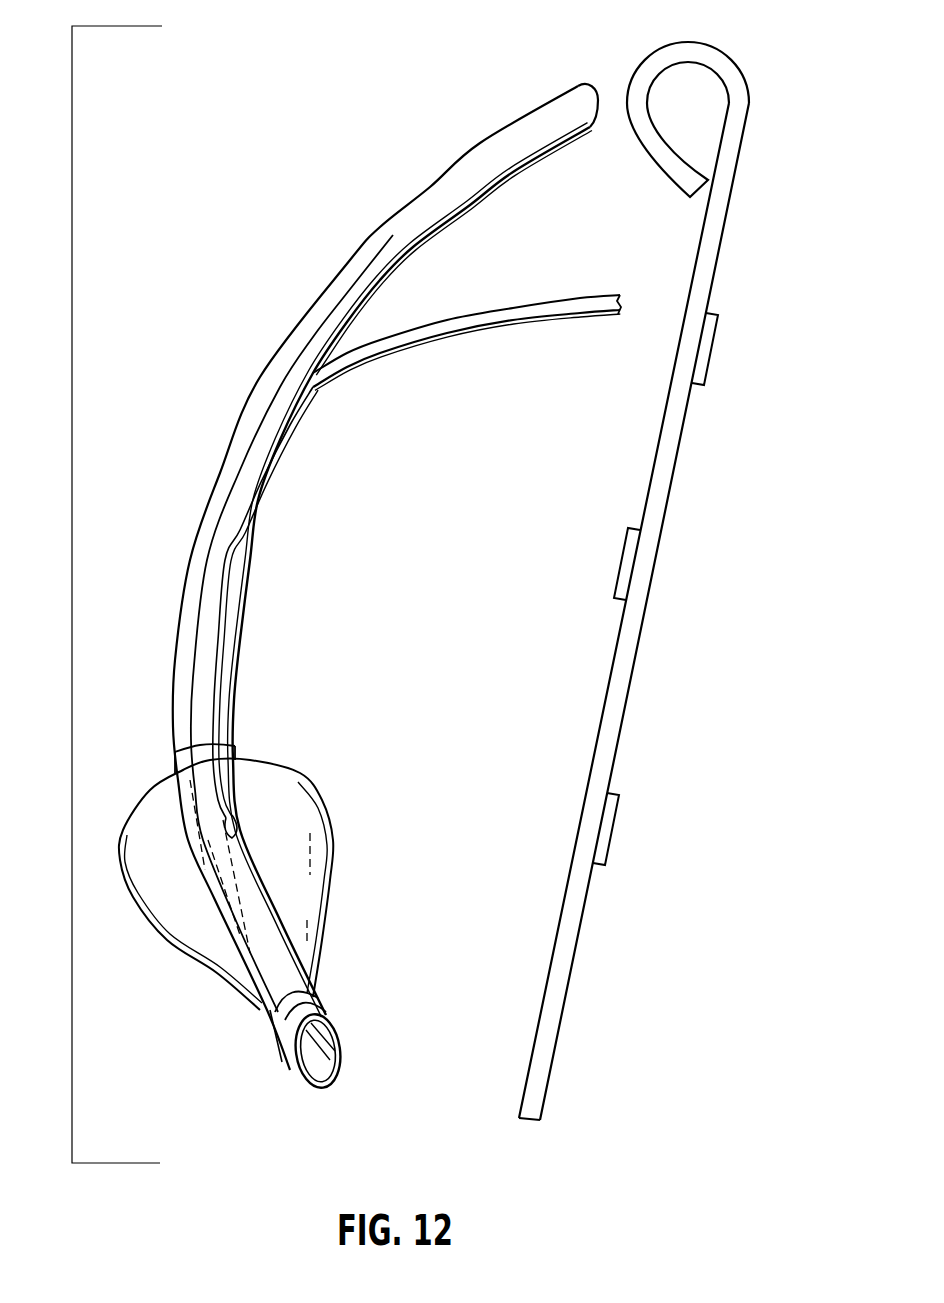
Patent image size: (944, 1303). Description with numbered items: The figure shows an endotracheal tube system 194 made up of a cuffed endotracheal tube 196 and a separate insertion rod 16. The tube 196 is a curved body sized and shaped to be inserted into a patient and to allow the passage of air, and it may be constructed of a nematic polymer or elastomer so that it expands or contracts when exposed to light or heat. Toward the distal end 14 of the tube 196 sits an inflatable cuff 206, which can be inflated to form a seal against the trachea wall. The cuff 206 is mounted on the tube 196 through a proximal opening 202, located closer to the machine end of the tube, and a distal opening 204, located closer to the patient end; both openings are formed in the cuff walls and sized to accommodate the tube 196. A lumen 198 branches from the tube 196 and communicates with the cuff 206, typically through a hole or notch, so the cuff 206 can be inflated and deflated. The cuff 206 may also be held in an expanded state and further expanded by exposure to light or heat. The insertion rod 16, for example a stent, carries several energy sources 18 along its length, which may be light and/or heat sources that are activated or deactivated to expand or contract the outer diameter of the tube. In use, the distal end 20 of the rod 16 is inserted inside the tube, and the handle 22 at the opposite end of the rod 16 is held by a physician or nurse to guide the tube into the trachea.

The distal end 14 is at (315, 1089).
The insertion rod 16 is at (597, 472).
The energy sources 18 is at (718, 340).
The distal end of the rod 20 is at (527, 1122).
The handle 22 is at (670, 41).
The endotracheal tube system 194 is at (72, 607).
The cuffed endotracheal tube 196 is at (252, 100).
The lumen 198 is at (497, 327).
The proximal opening 202 is at (180, 757).
The distal opening 204 is at (272, 1026).
The inflatable cuff 206 is at (335, 840).